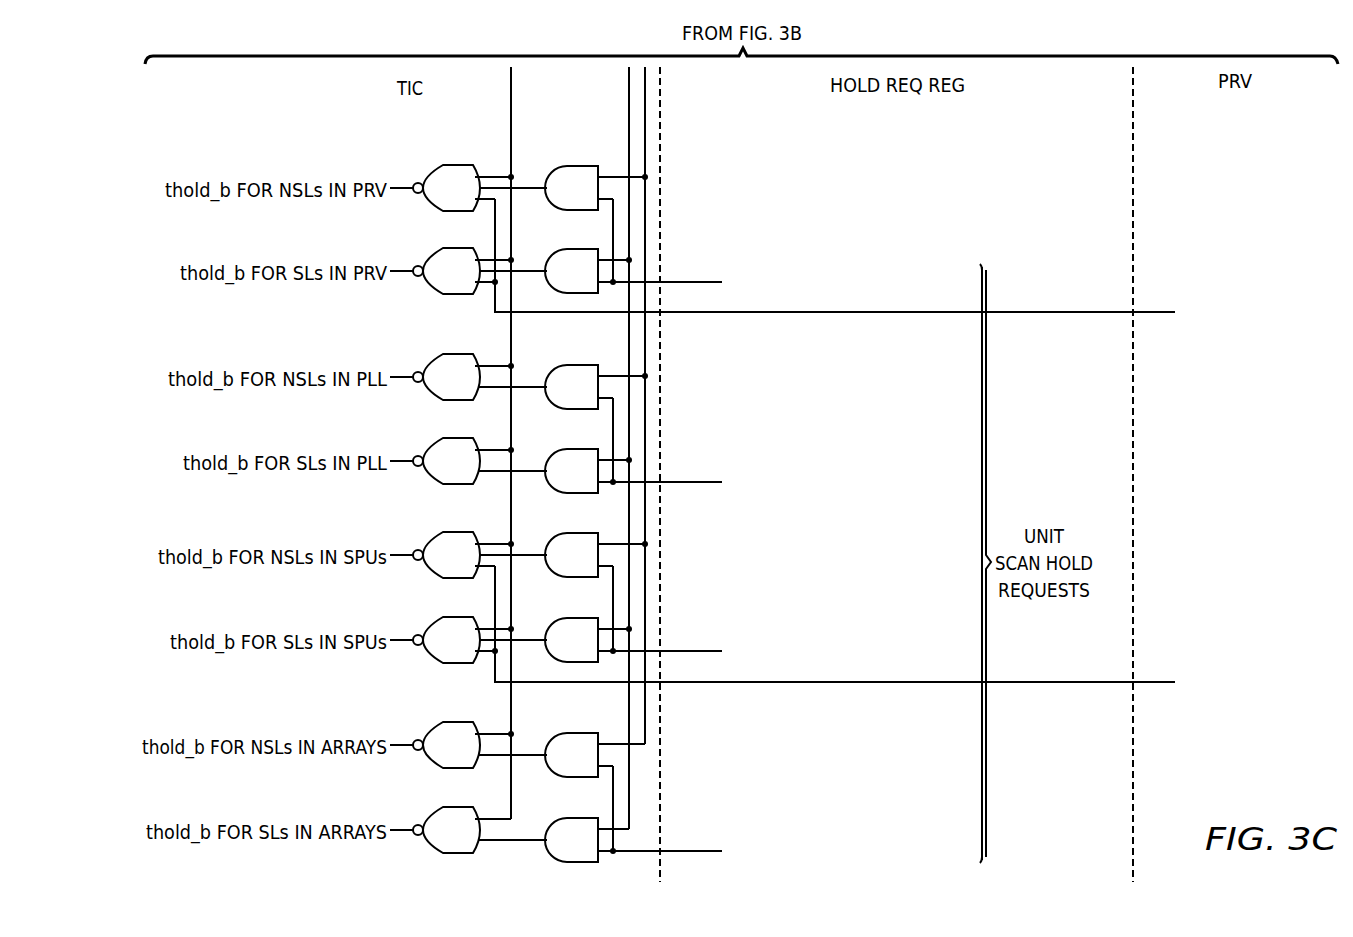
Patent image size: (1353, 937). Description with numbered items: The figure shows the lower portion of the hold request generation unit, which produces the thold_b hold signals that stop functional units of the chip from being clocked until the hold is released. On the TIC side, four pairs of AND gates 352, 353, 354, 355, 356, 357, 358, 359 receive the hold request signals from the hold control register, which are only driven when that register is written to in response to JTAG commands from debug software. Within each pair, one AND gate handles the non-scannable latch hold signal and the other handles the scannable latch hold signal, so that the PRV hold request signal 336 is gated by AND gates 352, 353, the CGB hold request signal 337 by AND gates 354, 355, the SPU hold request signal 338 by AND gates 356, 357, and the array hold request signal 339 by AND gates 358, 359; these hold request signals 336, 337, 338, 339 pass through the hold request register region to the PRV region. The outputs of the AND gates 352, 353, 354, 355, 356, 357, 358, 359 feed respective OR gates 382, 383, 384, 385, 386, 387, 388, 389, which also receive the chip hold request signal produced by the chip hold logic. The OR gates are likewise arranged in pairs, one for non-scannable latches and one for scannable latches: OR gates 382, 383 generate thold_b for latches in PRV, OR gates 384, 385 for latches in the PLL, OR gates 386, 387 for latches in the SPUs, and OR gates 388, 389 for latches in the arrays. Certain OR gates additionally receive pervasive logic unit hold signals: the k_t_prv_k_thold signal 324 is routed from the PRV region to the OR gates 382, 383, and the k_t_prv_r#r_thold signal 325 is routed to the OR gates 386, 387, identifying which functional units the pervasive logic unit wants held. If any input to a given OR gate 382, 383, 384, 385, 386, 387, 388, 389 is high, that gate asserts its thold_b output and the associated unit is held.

The OR gate 382 is at (445, 166).
The OR gate 383 is at (445, 249).
The OR gate 384 is at (445, 355).
The OR gate 385 is at (445, 439).
The OR gate 386 is at (445, 533).
The OR gate 387 is at (445, 618).
The OR gate 388 is at (445, 723).
The OR gate 389 is at (445, 808).
The AND gate 352 is at (552, 166).
The AND gate 353 is at (552, 249).
The AND gate 354 is at (552, 365).
The AND gate 355 is at (552, 449).
The AND gate 356 is at (552, 533).
The AND gate 357 is at (552, 618).
The AND gate 358 is at (552, 733).
The AND gate 359 is at (552, 818).
The hold request signal 336 is at (681, 281).
The hold request signal 337 is at (681, 483).
The hold request signal 338 is at (681, 650).
The hold request signal 339 is at (681, 850).
The pervasive logic unit hold signal 324 is at (1153, 313).
The pervasive logic unit hold signal 325 is at (1153, 683).